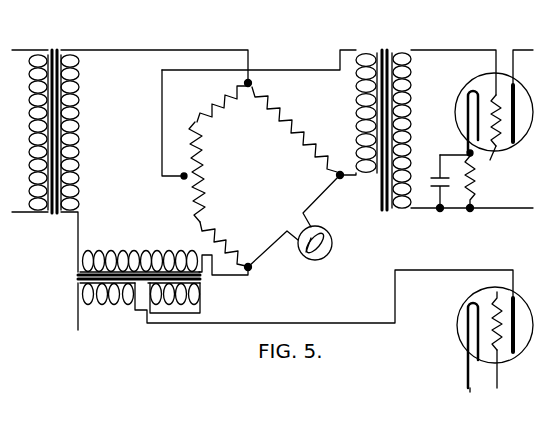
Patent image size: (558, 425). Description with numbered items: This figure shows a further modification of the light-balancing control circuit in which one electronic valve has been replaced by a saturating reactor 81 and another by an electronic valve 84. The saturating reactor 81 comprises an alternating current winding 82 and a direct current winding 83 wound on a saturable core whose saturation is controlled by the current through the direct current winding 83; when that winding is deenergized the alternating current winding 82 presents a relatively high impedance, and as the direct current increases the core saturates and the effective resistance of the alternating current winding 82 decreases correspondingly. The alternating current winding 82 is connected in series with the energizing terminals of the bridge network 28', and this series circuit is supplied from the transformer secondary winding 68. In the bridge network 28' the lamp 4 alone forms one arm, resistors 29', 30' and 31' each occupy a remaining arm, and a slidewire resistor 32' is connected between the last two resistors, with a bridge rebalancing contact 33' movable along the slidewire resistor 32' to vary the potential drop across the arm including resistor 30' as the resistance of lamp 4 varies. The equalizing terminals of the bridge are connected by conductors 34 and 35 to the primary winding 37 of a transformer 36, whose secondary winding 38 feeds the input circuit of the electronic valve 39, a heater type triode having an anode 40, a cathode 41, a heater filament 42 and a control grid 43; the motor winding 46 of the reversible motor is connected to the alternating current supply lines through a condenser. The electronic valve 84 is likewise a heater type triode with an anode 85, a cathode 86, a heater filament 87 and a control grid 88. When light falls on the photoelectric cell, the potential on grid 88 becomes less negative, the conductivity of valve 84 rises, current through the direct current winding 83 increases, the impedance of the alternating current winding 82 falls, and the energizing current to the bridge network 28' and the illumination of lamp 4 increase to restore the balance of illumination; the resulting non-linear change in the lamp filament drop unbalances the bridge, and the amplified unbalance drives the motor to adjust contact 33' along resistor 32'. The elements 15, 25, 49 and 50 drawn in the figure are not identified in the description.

The lamp 4 is at (333, 247).
The conductor 15 is at (78, 312).
The conductor 25 is at (497, 392).
The bridge network 28' is at (253, 176).
The resistor 29' is at (294, 129).
The resistor 30' is at (208, 244).
The resistor 31' is at (216, 104).
The slidewire resistor 32' is at (168, 135).
The bridge rebalancing contact 33' is at (187, 170).
The conductor 34 is at (356, 174).
The conductor 35 is at (303, 70).
The transformer 36 is at (385, 53).
The primary winding 37 is at (356, 118).
The secondary winding 38 is at (413, 100).
The electronic valve 39 is at (467, 140).
The anode 40 is at (513, 122).
The cathode 41 is at (466, 102).
The heater filament 42 is at (492, 94).
The control grid 43 is at (490, 160).
The motor winding 46 is at (1, 121).
The cathode resistor 49 is at (476, 185).
The capacitor 50 is at (428, 181).
The transformer secondary winding 68 is at (80, 113).
The saturating reactor 81 is at (204, 278).
The alternating current winding 82 is at (140, 254).
The direct current winding 83 is at (120, 296).
The electronic valve 84 is at (465, 340).
The anode 85 is at (532, 333).
The cathode 86 is at (467, 312).
The heater filament 87 is at (490, 300).
The control grid 88 is at (497, 352).